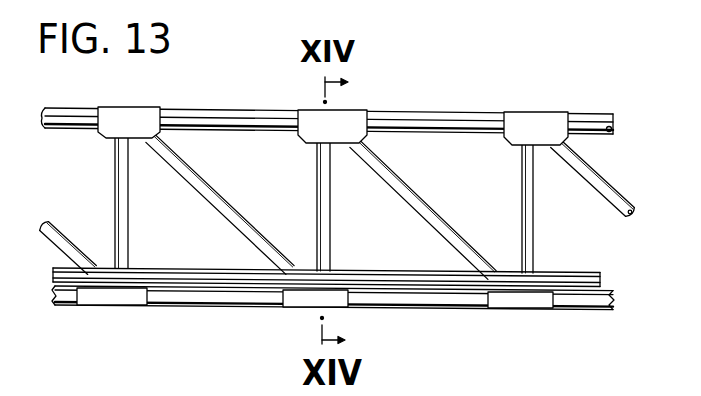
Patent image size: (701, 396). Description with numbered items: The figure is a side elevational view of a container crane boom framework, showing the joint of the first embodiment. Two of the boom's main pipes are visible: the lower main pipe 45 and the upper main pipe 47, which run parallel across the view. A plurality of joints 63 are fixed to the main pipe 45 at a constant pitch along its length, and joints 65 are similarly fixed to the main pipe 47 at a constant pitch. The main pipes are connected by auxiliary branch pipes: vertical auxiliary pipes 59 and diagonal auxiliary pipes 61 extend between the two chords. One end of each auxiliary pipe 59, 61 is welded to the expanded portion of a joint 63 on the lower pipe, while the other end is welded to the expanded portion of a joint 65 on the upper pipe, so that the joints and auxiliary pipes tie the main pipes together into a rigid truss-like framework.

The main pipe 45 is at (437, 303).
The main pipe 47 is at (452, 115).
The auxiliary branch pipe 59 is at (122, 220).
The auxiliary branch pipe 61 is at (68, 242).
The joint 63 is at (114, 305).
The joint 65 is at (143, 110).